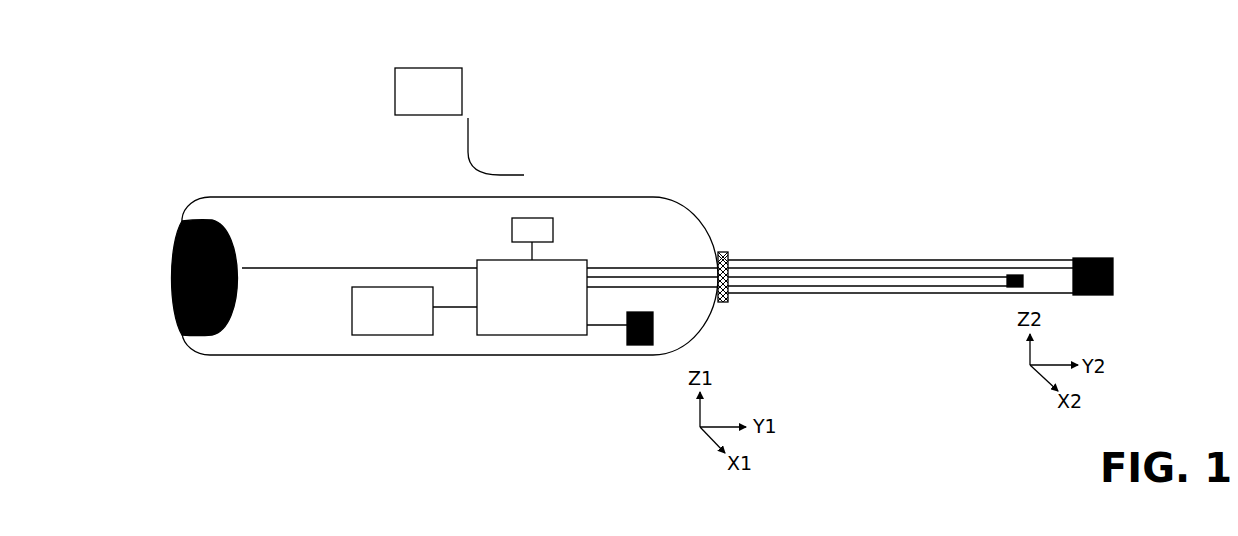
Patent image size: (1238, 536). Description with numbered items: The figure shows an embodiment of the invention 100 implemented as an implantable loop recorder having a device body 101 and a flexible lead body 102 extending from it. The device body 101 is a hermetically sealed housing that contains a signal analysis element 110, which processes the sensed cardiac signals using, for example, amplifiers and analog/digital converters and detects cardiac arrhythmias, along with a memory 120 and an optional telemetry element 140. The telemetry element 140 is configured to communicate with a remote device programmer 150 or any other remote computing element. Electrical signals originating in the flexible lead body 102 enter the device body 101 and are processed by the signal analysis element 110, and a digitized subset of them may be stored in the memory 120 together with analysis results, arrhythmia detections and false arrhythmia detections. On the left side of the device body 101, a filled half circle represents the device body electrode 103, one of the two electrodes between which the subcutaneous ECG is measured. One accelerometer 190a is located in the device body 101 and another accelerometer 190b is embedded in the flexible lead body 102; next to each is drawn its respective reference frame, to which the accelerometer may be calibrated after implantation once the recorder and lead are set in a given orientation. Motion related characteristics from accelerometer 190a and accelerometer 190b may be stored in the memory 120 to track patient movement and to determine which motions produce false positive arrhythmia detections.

The embodiment of the invention 100 is at (630, 148).
The device body 101 is at (267, 197).
The flexible lead body 102 is at (884, 260).
The device body electrode 103 is at (172, 313).
The signal analysis element 110 is at (520, 338).
The memory 120 is at (387, 338).
The telemetry element 140 is at (532, 218).
The remote device programmer 150 is at (466, 96).
The accelerometer 190a is at (627, 344).
The accelerometer 190b is at (1007, 280).